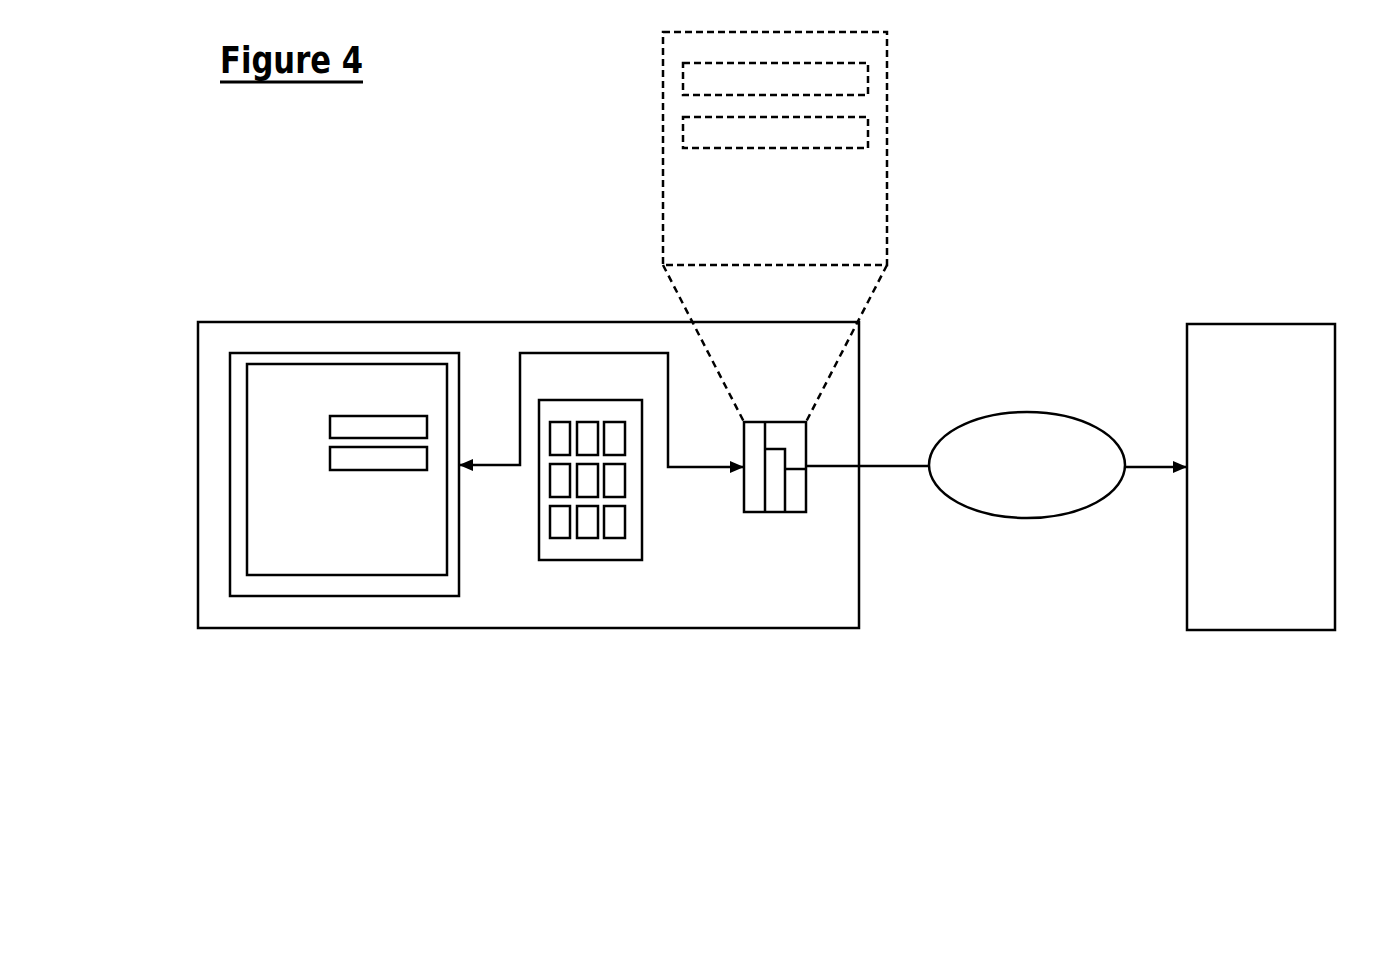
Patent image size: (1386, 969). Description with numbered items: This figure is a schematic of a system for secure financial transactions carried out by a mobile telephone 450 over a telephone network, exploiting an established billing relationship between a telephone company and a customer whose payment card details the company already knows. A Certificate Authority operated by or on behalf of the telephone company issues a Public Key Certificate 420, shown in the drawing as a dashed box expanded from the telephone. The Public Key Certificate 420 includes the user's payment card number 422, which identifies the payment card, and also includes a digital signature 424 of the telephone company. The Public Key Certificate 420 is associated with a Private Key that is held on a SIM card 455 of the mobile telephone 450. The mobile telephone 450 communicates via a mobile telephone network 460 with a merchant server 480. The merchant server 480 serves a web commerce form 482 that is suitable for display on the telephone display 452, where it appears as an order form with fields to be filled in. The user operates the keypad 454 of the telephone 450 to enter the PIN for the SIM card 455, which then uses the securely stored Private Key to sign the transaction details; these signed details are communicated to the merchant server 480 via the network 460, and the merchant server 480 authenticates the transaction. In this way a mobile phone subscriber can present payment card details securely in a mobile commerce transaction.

The Public Key Certificate 420 is at (706, 254).
The payment card number 422 is at (756, 92).
The digital signature 424 is at (736, 148).
The mobile telephone 450 is at (757, 623).
The telephone display 452 is at (258, 600).
The keypad 454 is at (568, 537).
The SIM card 455 is at (744, 518).
The mobile telephone network 460 is at (1018, 518).
The merchant server 480 is at (1208, 598).
The web commerce form 482 is at (395, 553).